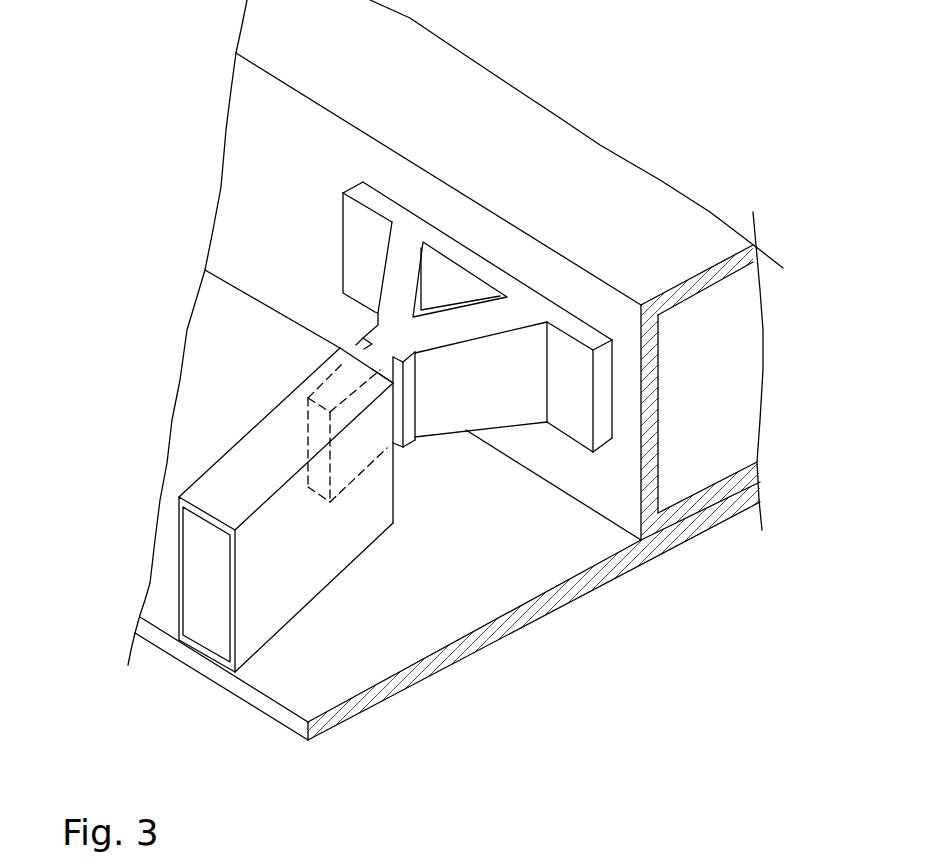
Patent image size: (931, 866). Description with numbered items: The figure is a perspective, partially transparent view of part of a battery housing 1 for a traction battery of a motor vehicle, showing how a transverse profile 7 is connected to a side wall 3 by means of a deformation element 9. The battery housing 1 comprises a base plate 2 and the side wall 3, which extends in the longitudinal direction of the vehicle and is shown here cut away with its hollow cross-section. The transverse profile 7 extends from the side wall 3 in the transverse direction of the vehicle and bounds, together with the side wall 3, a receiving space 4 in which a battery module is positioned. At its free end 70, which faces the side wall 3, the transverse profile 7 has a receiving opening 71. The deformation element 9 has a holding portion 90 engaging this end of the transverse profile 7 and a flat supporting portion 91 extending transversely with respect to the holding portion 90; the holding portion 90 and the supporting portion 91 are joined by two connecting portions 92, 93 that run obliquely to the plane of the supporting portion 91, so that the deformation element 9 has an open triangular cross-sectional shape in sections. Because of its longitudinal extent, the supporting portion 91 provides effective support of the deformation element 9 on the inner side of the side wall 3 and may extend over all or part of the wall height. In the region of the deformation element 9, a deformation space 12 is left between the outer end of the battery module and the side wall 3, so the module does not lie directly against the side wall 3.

The battery housing 1 is at (215, 717).
The base plate 2 is at (446, 659).
The side wall 3 is at (472, 108).
The receiving space 4 is at (377, 621).
The transverse profile 7 is at (278, 592).
The deformation element 9 is at (448, 452).
The deformation space 12 is at (498, 498).
The free end 70 is at (317, 378).
The receiving opening 71 is at (378, 372).
The holding portion 90 is at (359, 437).
The supporting portion 91 is at (583, 328).
The connecting portion 92 is at (487, 390).
The connecting portion 93 is at (400, 270).